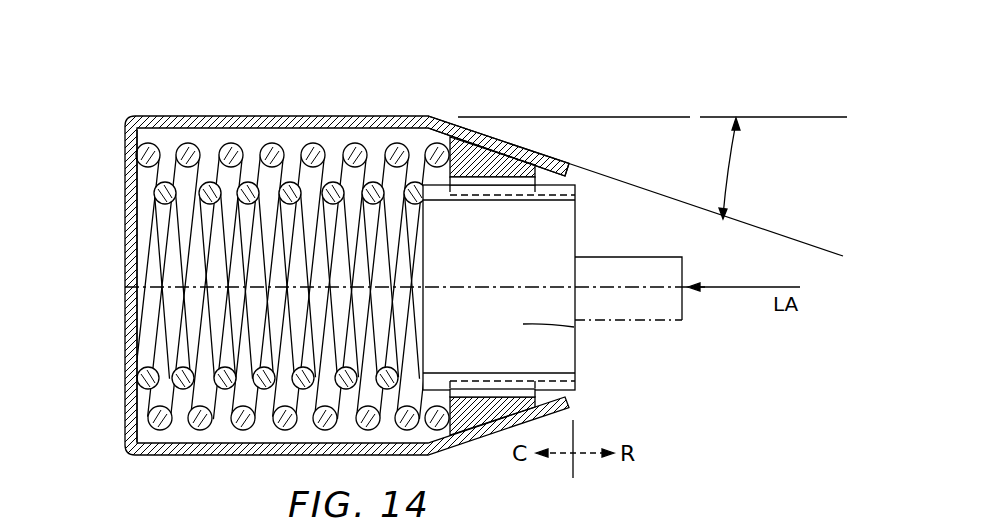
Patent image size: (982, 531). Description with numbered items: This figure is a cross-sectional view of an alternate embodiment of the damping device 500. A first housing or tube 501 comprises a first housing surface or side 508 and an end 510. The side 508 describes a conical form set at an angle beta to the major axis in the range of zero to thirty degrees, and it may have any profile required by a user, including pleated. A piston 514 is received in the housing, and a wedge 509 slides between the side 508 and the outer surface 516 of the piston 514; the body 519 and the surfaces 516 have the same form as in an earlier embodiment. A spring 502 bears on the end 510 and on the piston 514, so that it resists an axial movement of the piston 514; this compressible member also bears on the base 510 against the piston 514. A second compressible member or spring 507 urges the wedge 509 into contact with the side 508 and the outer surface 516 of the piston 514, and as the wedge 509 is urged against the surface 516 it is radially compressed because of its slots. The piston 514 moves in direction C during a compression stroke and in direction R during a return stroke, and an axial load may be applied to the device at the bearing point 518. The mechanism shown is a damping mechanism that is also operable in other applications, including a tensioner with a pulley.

The damper assembly 500 is at (712, 86).
The first housing or tube 501 is at (203, 116).
The spring 502 is at (156, 190).
The spring 507 is at (311, 143).
The first housing surface or side 508 is at (481, 140).
The wedge 509 is at (516, 158).
The end 510 is at (126, 180).
The piston 514 is at (624, 329).
The outer surface 516 is at (576, 192).
The bearing point 518 is at (684, 272).
The body 519 is at (574, 327).